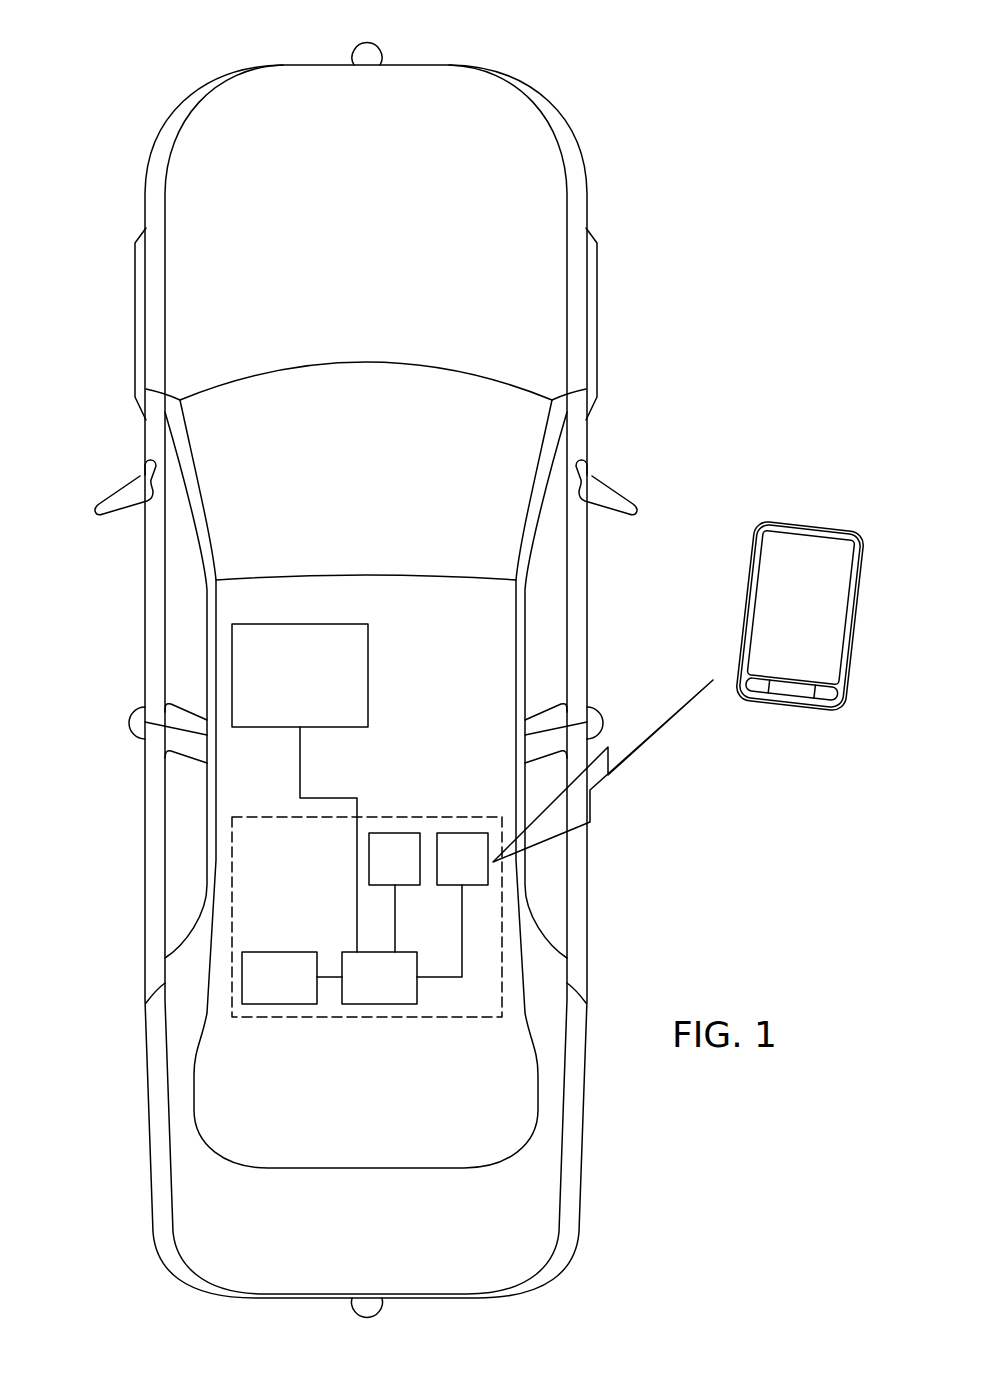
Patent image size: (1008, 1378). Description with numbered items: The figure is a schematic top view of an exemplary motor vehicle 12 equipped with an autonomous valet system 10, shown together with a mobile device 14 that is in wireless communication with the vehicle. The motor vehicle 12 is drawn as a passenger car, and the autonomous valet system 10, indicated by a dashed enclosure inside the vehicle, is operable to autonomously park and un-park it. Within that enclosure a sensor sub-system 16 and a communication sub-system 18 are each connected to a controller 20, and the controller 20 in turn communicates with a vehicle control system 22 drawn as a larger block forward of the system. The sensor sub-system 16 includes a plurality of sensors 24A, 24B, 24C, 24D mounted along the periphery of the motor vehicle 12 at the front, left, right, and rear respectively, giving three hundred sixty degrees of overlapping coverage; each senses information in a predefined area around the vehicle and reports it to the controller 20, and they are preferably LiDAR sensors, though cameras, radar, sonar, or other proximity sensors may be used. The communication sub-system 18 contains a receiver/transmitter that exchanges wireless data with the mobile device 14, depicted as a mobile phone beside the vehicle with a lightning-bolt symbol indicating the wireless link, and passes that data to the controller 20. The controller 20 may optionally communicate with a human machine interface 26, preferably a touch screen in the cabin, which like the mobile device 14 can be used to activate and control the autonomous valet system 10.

The autonomous valet system 10 is at (503, 945).
The motor vehicle 12 is at (543, 110).
The mobile device 14 is at (799, 615).
The sensor sub-system 16 is at (270, 995).
The communication sub-system 18 is at (452, 877).
The controller 20 is at (370, 995).
The vehicle control system 22 is at (290, 693).
The sensor 24A is at (353, 48).
The sensor 24B is at (130, 714).
The sensor 24C is at (600, 707).
The sensor 24D is at (383, 1307).
The human machine interface 26 is at (384, 877).